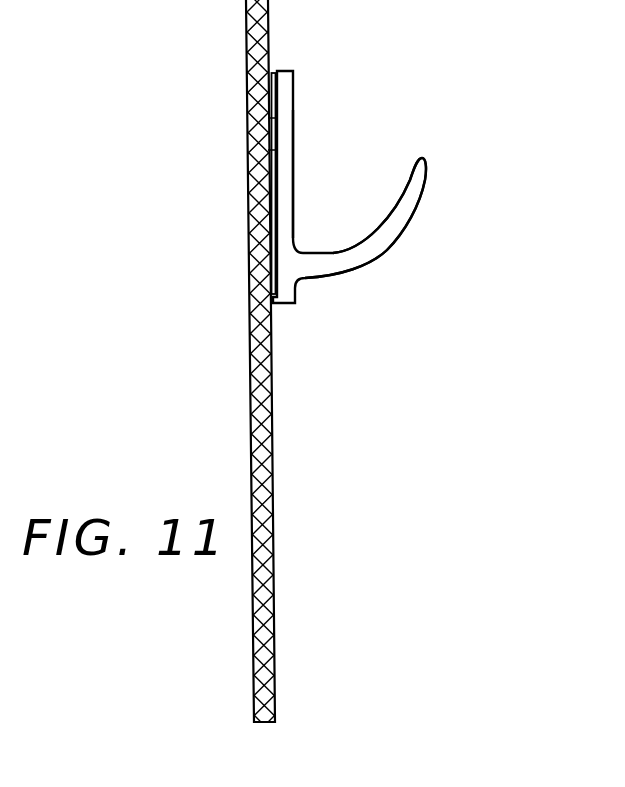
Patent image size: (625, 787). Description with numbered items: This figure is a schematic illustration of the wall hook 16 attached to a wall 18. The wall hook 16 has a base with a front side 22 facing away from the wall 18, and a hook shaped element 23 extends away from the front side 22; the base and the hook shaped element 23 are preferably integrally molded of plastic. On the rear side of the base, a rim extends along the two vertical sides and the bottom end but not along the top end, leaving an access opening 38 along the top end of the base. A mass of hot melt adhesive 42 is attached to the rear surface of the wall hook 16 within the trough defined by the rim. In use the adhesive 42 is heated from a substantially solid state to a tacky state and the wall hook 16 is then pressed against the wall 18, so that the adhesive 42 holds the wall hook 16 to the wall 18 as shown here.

The wall hook 16 is at (293, 115).
The wall 18 is at (250, 342).
The front side 22 is at (294, 187).
The hook shaped element 23 is at (388, 252).
The access opening 38 is at (276, 64).
The mass of hot melt adhesive 42 is at (272, 152).